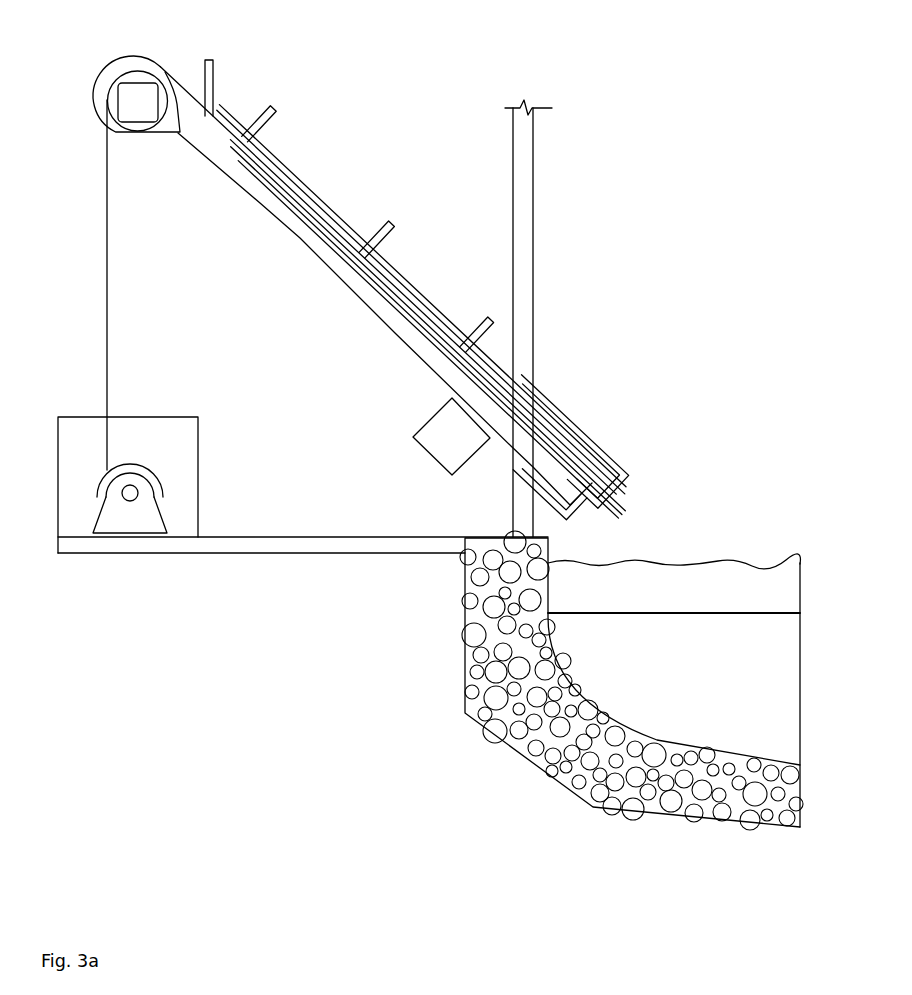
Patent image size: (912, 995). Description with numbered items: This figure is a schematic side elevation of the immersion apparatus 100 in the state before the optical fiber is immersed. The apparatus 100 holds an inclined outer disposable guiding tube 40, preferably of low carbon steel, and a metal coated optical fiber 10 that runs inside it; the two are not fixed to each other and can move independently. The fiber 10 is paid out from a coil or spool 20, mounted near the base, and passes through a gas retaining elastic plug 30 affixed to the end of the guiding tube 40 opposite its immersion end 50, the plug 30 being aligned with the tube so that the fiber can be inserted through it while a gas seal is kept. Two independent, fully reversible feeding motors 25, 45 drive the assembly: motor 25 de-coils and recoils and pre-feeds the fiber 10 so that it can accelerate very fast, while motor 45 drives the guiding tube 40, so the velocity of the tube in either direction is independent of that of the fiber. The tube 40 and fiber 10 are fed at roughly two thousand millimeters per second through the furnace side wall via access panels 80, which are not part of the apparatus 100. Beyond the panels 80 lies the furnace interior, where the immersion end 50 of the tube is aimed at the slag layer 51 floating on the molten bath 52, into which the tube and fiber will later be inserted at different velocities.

The feeding motor 25 is at (142, 102).
The optical fiber 10 is at (217, 130).
The gas retaining elastic plug 30 is at (231, 150).
The apparatus 100 is at (236, 197).
The outer disposable guiding tube 40 is at (368, 278).
The feeding motor 45 is at (452, 423).
The spool 20 is at (152, 482).
The access panels 80 is at (580, 438).
The immersion end 50 is at (622, 515).
The slag layer 51 is at (668, 584).
The molten bath 52 is at (723, 660).